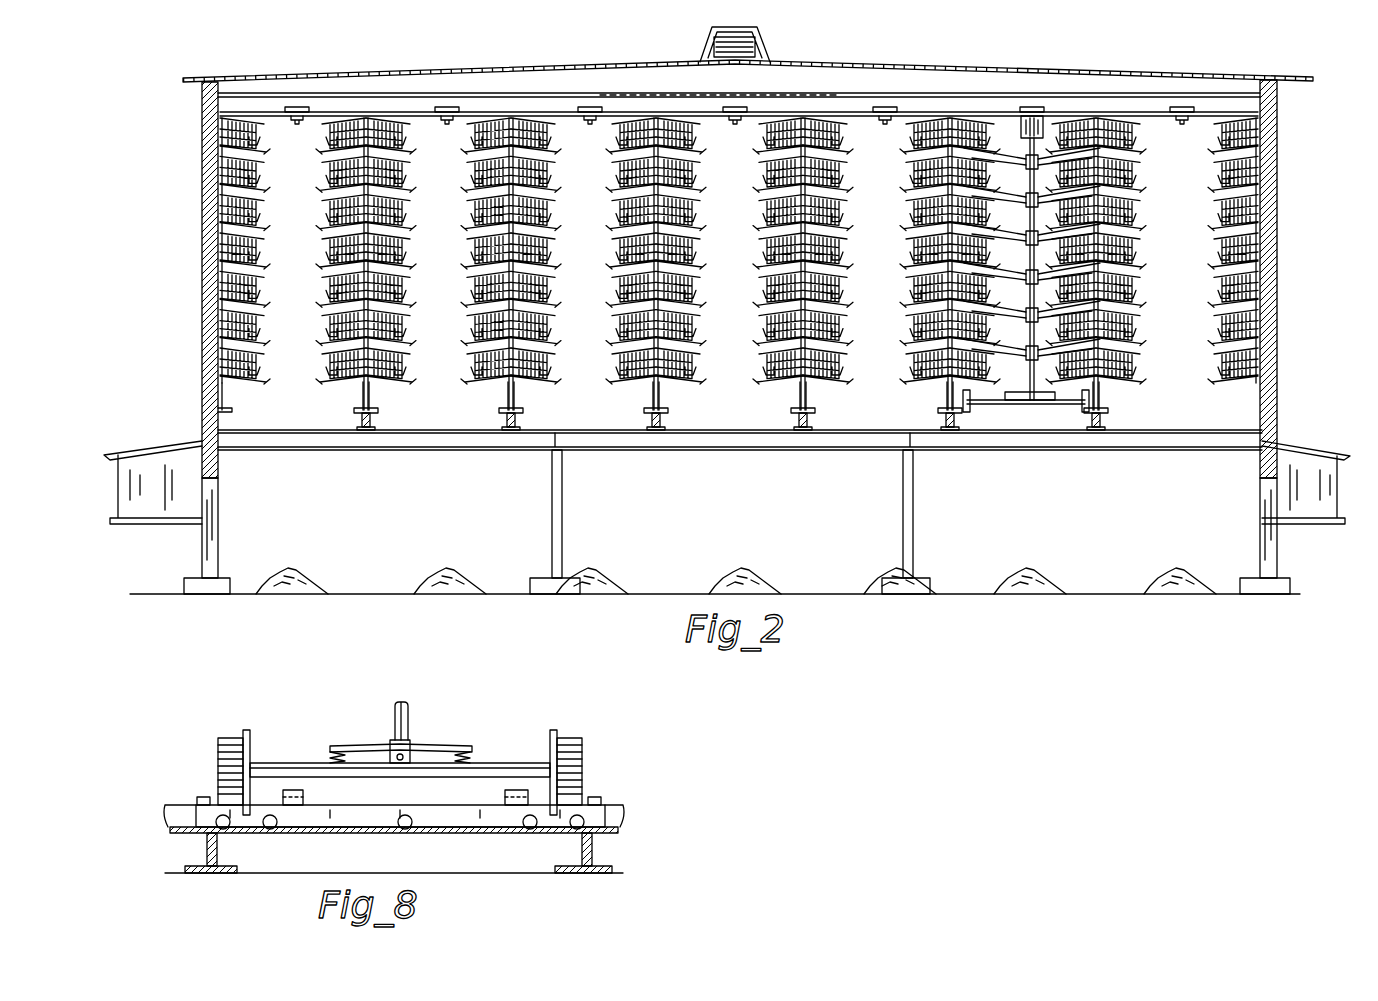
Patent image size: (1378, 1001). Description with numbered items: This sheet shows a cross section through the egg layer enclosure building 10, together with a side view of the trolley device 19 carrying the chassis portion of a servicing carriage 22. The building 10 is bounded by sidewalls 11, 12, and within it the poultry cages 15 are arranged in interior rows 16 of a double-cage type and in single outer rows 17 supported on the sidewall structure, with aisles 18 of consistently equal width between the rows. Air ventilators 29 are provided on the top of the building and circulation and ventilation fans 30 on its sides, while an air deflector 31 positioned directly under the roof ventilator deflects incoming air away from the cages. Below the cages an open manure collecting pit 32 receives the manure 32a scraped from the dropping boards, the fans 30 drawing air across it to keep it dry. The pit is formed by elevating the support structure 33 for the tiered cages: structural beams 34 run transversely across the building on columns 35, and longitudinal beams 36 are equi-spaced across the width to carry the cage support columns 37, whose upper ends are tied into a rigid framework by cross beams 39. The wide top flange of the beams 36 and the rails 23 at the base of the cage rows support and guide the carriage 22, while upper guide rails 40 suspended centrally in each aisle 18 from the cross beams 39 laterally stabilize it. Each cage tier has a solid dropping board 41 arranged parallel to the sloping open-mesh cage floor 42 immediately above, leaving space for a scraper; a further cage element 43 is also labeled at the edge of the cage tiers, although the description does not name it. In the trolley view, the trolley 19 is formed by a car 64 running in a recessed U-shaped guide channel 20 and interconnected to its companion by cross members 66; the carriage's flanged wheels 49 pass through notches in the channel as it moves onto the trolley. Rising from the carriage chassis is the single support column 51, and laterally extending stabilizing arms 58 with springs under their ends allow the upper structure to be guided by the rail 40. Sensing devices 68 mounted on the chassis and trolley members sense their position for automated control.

In FIG. 2, the enclosure building 10 is at (174, 266).
In FIG. 2, the sidewall 11 is at (202, 192).
In FIG. 2, the sidewall 12 is at (1278, 292).
In FIG. 2, the poultry cages 15 is at (682, 288).
In FIG. 2, the interior rows 16 is at (545, 200).
In FIG. 2, the outer rows 17 is at (256, 200).
In FIG. 2, the aisles 18 is at (598, 287).
In FIG. 8, the trolley device 19 is at (462, 822).
In FIG. 8, the guide channel 20 is at (615, 815).
In FIG. 2, the servicing carriage 22 is at (1030, 425).
In FIG. 2, the rails 23 is at (660, 408).
In FIG. 2, the air ventilators 29 is at (762, 34).
In FIG. 2, the circulation and ventilation fans 30 is at (130, 490).
In FIG. 2, the air deflector 31 is at (822, 93).
In FIG. 2, the manure collecting pit 32 is at (399, 527).
In FIG. 2, the manure 32a is at (468, 572).
In FIG. 2, the support structure 33 is at (378, 450).
In FIG. 2, the structural beams 34 is at (465, 447).
In FIG. 2, the columns 35 is at (561, 547).
In FIG. 2, the longitudinal beams 36 is at (378, 414).
In FIG. 8, the longitudinal beams 36 is at (592, 858).
In FIG. 2, the cage support columns 37 is at (372, 390).
In FIG. 2, the cross beams 39 is at (905, 114).
In FIG. 2, the upper guide rails 40 is at (447, 110).
In FIG. 2, the dropping boards 41 is at (255, 268).
In FIG. 2, the cage floor 42 is at (840, 152).
In FIG. 2, the egg tray 43 is at (258, 214).
In FIG. 8, the wheels 49 is at (225, 740).
In FIG. 8, the single support column 51 is at (410, 712).
In FIG. 8, the stabilizing arms 58 is at (440, 745).
In FIG. 8, the car 64 is at (418, 812).
In FIG. 8, the cross members 66 is at (300, 800).
In FIG. 8, the sensing devices 68 is at (205, 797).